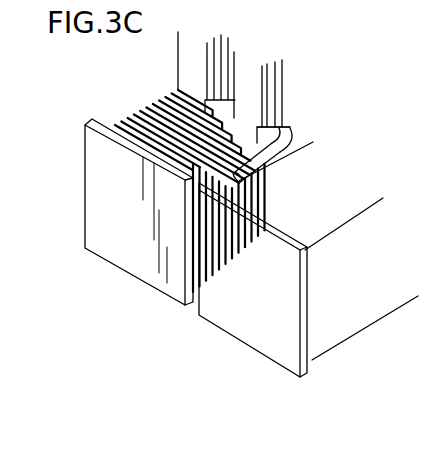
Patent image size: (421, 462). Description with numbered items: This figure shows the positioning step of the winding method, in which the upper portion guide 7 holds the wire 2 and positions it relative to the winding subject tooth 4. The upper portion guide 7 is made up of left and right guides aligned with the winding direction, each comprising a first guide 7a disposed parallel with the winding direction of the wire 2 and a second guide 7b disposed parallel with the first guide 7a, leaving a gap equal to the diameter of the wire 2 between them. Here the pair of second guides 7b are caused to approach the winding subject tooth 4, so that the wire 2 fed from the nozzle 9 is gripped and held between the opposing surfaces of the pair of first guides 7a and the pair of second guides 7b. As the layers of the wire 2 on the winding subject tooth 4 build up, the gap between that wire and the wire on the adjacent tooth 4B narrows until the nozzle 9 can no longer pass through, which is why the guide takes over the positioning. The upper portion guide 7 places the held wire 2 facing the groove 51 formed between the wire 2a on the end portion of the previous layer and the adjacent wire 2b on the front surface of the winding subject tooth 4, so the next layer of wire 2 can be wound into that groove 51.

The wire 2 is at (295, 135).
The wire on end portion of Nth layer 2a is at (270, 212).
The adjacent wire 2b is at (262, 237).
The winding subject tooth 4 is at (123, 252).
The adjacent tooth 4B is at (235, 308).
The upper portion guide 7 is at (300, 49).
The first guide 7a is at (229, 47).
The second guide 7b is at (190, 73).
The nozzle 9 is at (270, 160).
The groove 51 is at (270, 188).